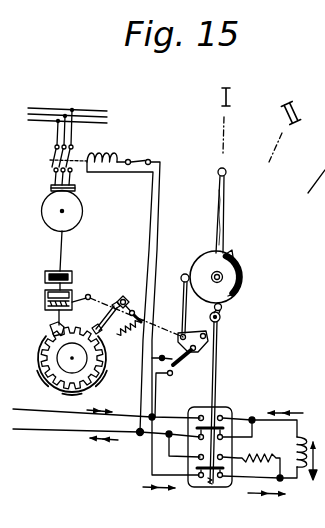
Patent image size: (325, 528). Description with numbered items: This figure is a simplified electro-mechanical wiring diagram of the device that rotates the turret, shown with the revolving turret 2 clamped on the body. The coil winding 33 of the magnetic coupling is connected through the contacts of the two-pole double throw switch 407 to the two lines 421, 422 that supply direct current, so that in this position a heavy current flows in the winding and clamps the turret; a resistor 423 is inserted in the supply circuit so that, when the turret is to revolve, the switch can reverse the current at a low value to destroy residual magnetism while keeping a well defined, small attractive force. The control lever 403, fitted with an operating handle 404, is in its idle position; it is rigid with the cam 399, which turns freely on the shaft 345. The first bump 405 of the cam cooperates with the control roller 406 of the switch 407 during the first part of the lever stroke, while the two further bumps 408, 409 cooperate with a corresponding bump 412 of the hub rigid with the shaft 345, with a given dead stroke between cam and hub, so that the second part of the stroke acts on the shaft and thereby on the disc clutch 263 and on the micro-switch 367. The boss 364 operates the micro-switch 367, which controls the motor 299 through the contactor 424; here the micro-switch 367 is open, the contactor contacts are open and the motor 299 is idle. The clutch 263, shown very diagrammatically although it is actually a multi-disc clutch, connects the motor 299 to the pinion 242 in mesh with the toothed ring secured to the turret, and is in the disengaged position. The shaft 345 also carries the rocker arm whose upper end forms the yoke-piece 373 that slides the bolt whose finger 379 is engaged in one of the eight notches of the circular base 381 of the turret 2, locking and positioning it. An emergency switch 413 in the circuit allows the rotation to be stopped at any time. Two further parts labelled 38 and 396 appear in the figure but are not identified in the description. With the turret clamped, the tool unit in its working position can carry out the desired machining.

The revolving turret 2 is at (78, 364).
The coil winding 33 is at (292, 449).
The ratchet wheel 38 is at (46, 350).
The pinion 242 is at (50, 324).
The disc clutch 263 is at (75, 289).
The motor 299 is at (73, 216).
The shaft 345 is at (212, 275).
The boss 364 is at (183, 377).
The micro-switch 367 is at (170, 394).
The yoke-piece 373 is at (126, 302).
The finger 379 is at (94, 326).
The circular base 381 is at (40, 372).
The spring 396 is at (133, 338).
The cam 399 is at (224, 304).
The lever 403 is at (224, 210).
The operating handle 404 is at (226, 172).
The first bump 405 is at (221, 320).
The control roller 406 is at (218, 325).
The two-pole double throw switch 407 is at (228, 407).
The bump 408 is at (230, 255).
The bump 409 is at (239, 290).
The bump 412 is at (242, 268).
The emergency switch 413 is at (148, 159).
The line 421 is at (106, 408).
The line 422 is at (106, 437).
The resistor 423 is at (252, 459).
The contactor 424 is at (101, 286).